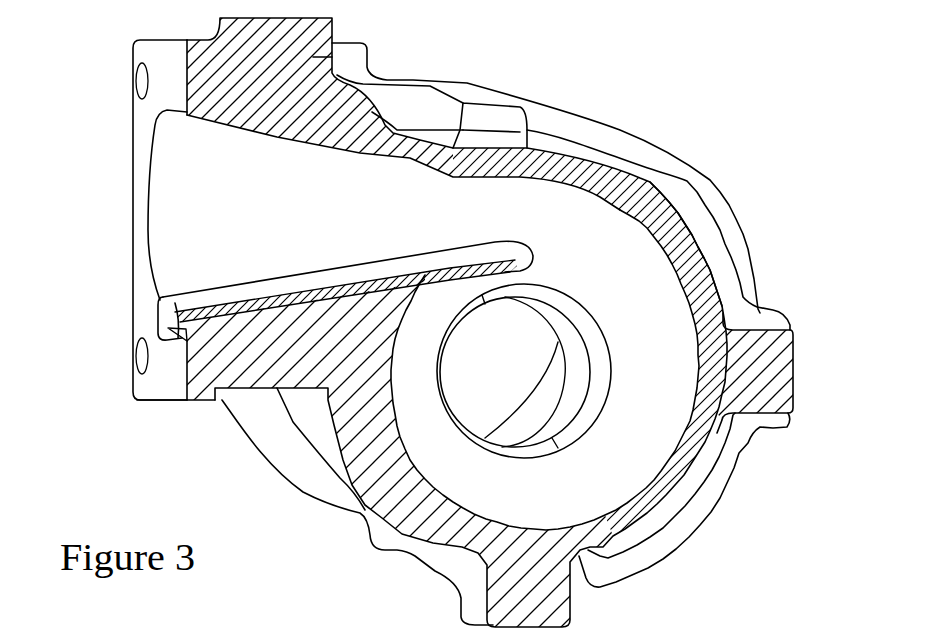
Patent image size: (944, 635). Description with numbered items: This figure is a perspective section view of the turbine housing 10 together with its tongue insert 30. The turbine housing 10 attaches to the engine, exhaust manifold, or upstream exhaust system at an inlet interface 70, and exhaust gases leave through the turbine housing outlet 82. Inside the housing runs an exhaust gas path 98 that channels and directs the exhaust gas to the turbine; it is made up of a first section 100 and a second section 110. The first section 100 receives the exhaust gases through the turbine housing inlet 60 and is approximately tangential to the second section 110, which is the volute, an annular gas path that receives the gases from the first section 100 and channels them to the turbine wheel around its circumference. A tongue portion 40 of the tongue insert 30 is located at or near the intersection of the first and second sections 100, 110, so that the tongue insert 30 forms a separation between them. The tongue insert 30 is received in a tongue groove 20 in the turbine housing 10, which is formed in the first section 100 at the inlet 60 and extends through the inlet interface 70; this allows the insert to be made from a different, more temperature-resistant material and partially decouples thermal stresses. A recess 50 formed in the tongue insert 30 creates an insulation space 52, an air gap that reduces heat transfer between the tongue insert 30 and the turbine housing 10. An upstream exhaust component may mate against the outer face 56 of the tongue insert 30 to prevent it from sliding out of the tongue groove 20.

The turbine housing 10 is at (758, 525).
The tongue groove 20 is at (177, 341).
The tongue insert 30 is at (295, 272).
The tongue portion 40 is at (553, 183).
The recess 50 is at (167, 340).
The insulation space 52 is at (283, 298).
The outer face 56 is at (160, 317).
The turbine housing inlet 60 is at (228, 183).
The inlet interface 70 is at (170, 385).
The turbine housing outlet 82 is at (507, 362).
The exhaust gas path 98 is at (603, 236).
The first section 100 is at (337, 210).
The second section 110 is at (640, 406).